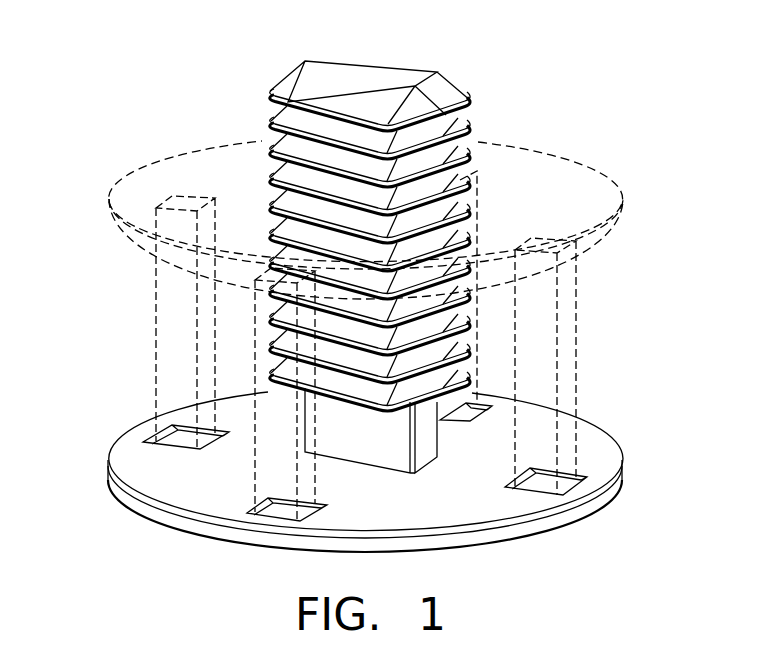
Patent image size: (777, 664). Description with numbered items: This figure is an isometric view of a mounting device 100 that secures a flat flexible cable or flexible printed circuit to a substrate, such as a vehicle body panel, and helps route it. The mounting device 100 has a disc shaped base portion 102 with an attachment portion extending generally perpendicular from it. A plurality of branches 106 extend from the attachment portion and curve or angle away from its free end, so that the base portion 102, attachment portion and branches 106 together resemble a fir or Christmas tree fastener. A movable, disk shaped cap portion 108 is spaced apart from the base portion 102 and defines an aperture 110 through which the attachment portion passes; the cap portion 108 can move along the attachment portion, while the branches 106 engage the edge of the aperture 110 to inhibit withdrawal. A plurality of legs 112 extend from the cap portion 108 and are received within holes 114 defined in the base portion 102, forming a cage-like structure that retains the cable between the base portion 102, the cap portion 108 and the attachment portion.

The mounting device 100 is at (194, 52).
The base portion 102 is at (605, 497).
The branches 106 is at (440, 88).
The cap portion 108 is at (626, 195).
The aperture 110 is at (562, 163).
The legs 112 is at (262, 372).
The holes 114 is at (150, 436).